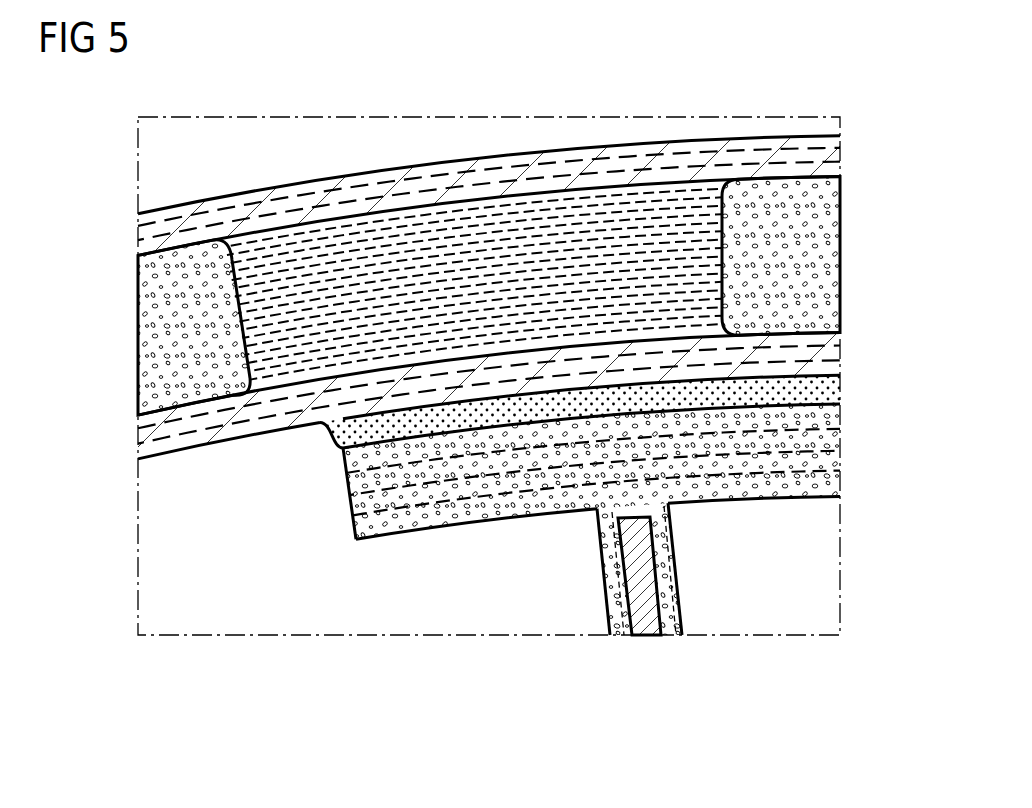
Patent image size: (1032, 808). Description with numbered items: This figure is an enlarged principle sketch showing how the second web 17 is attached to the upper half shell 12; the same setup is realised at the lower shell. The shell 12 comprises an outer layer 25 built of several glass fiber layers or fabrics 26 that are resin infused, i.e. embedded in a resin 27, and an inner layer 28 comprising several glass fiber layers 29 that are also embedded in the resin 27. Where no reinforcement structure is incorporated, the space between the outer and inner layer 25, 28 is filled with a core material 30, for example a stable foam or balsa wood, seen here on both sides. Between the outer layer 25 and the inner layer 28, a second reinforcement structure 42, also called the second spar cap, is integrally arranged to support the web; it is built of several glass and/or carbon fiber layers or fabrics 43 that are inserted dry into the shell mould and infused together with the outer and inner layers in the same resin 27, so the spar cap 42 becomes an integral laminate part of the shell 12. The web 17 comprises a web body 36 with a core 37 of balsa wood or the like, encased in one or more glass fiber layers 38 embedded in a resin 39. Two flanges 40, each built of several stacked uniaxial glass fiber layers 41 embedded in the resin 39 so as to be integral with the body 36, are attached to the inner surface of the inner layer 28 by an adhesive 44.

The upper half shell 12 is at (213, 460).
The second web 17 is at (698, 606).
The outer layer 25 is at (537, 150).
The glass fiber layers 26 is at (230, 225).
The resin 27 is at (278, 427).
The inner layer 28 is at (145, 432).
The glass fiber layers 29 is at (827, 349).
The core material 30 is at (148, 355).
The web body 36 is at (705, 553).
The core 37 is at (655, 628).
The glass fiber layers 38 is at (604, 557).
The resin 39 is at (437, 517).
The flange 40 is at (336, 553).
The uniaxial glass fiber layers 41 is at (828, 456).
The second reinforcement structure 42 is at (458, 184).
The glass and/or carbon fiber layers 43 is at (632, 248).
The adhesive 44 is at (840, 391).